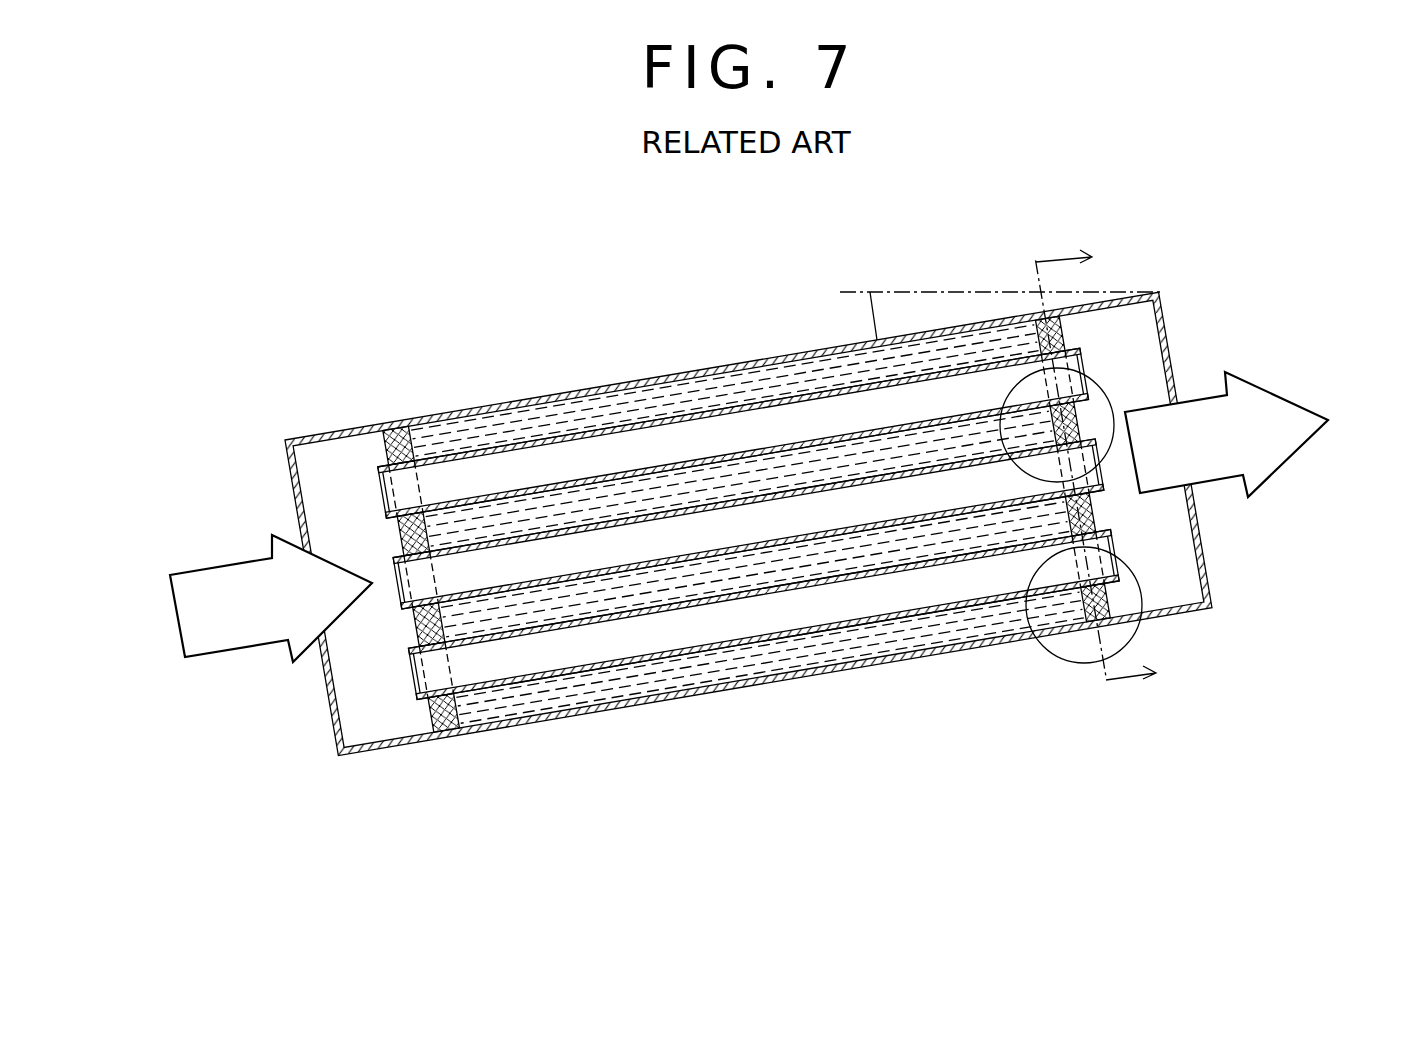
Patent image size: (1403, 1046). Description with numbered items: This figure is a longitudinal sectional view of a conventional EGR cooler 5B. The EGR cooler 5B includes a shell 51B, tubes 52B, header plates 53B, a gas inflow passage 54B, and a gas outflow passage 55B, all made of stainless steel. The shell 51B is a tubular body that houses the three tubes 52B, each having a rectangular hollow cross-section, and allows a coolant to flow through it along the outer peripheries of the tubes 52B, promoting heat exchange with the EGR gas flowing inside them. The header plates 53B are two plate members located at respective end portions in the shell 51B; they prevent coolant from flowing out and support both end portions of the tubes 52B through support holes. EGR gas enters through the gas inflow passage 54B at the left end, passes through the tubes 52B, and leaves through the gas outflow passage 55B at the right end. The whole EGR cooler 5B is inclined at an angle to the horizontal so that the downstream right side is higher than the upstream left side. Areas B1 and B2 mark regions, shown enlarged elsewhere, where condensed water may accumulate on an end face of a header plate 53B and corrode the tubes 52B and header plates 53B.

The EGR cooler 5B is at (749, 506).
The shell 51B is at (535, 735).
The tubes 52B is at (490, 448).
The header plates 53B is at (408, 635).
The gas inflow passage 54B is at (340, 757).
The gas outflow passage 55B is at (1208, 607).
The area B1 is at (1117, 395).
The area B2 is at (1140, 578).